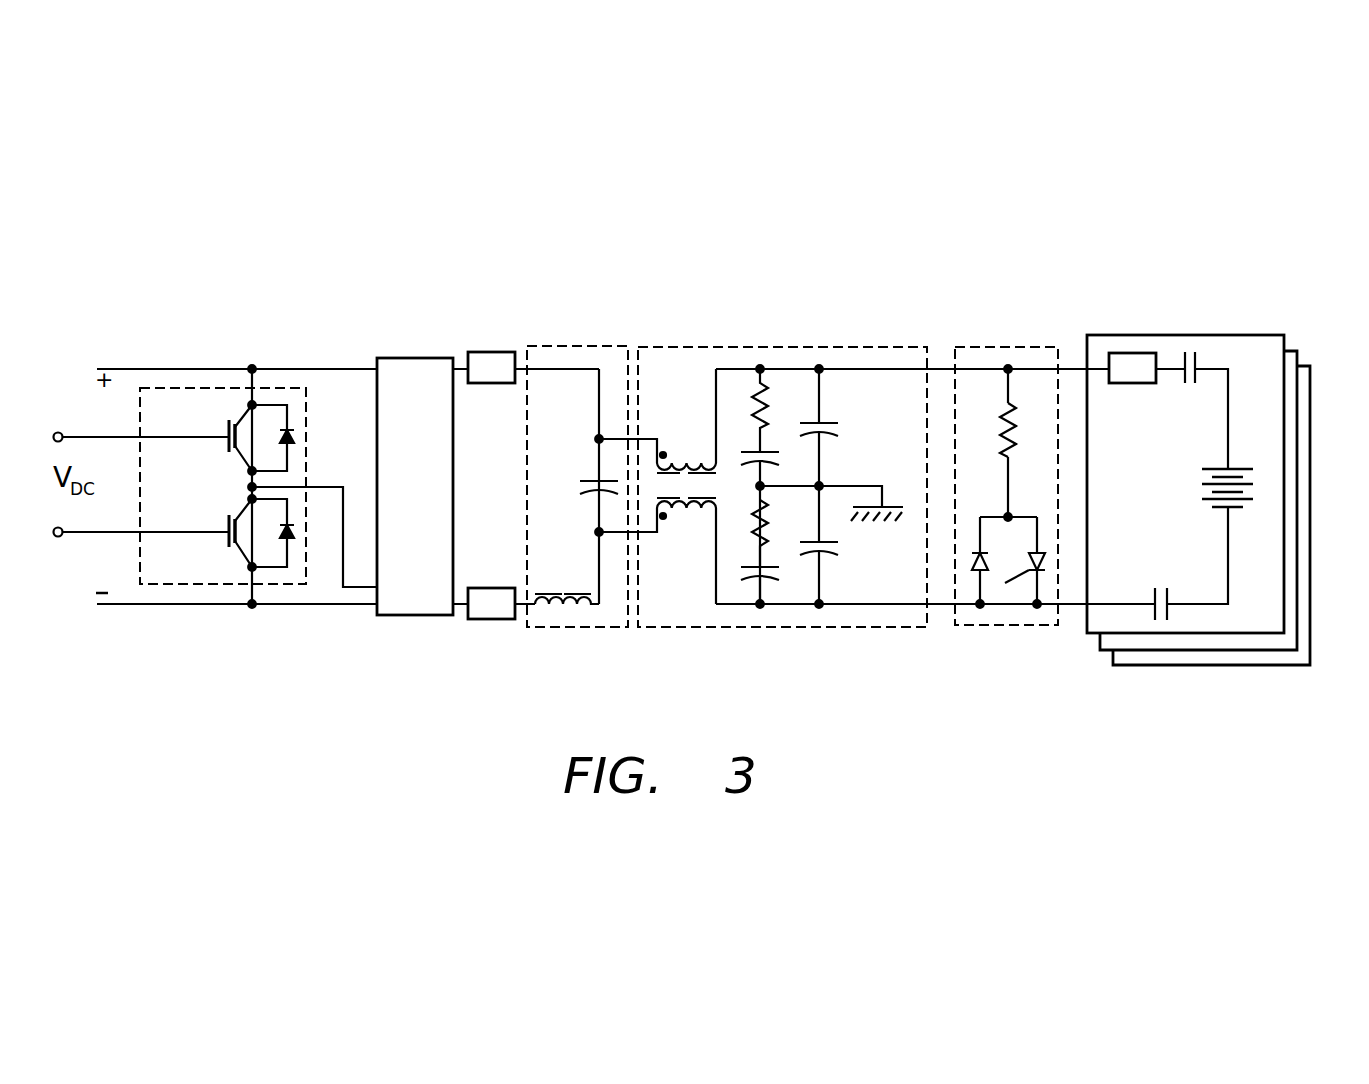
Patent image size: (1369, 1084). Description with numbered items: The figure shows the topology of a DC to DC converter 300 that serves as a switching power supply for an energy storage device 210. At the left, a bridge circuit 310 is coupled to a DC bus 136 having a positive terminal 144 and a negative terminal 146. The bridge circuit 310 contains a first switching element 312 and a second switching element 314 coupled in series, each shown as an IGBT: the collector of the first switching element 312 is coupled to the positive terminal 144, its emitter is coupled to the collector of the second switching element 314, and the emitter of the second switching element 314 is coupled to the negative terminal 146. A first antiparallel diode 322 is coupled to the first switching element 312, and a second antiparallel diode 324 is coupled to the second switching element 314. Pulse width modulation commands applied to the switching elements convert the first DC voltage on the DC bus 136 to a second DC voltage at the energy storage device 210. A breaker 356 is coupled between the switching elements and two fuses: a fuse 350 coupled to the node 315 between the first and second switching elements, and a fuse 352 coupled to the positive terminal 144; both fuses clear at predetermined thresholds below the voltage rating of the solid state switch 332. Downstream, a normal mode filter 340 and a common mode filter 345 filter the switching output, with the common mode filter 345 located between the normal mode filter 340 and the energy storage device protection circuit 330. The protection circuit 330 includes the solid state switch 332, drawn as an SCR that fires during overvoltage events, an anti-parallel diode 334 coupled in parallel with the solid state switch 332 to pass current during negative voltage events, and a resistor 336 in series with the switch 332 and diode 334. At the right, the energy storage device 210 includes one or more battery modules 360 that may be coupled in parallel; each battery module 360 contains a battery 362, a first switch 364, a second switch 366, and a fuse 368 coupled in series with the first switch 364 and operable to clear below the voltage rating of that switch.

The DC bus 136 is at (118, 369).
The positive terminal 144 is at (208, 369).
The negative terminal 146 is at (192, 604).
The bridge circuit 310 is at (288, 388).
The first switching element 312 is at (227, 433).
The second switching element 314 is at (227, 538).
The node 315 is at (248, 483).
The first antiparallel diode 322 is at (290, 413).
The freewheeling diode 324 is at (291, 528).
The breaker 356 is at (441, 493).
The fuse 352 is at (487, 352).
The fuse 350 is at (490, 619).
The DC to DC converter 300 is at (523, 300).
The normal mode filter 340 is at (575, 346).
The common mode filter 345 is at (725, 347).
The energy storage device protection circuit 330 is at (983, 347).
The resistor 336 is at (1012, 413).
The anti-parallel diode 334 is at (980, 560).
The solid state switch 332 is at (1040, 560).
The battery module 360 is at (1227, 335).
The fuse 368 is at (1133, 353).
The first switch 364 is at (1182, 377).
The battery 362 is at (1202, 503).
The second switch 366 is at (1152, 595).
The energy storage device 210 is at (1210, 285).